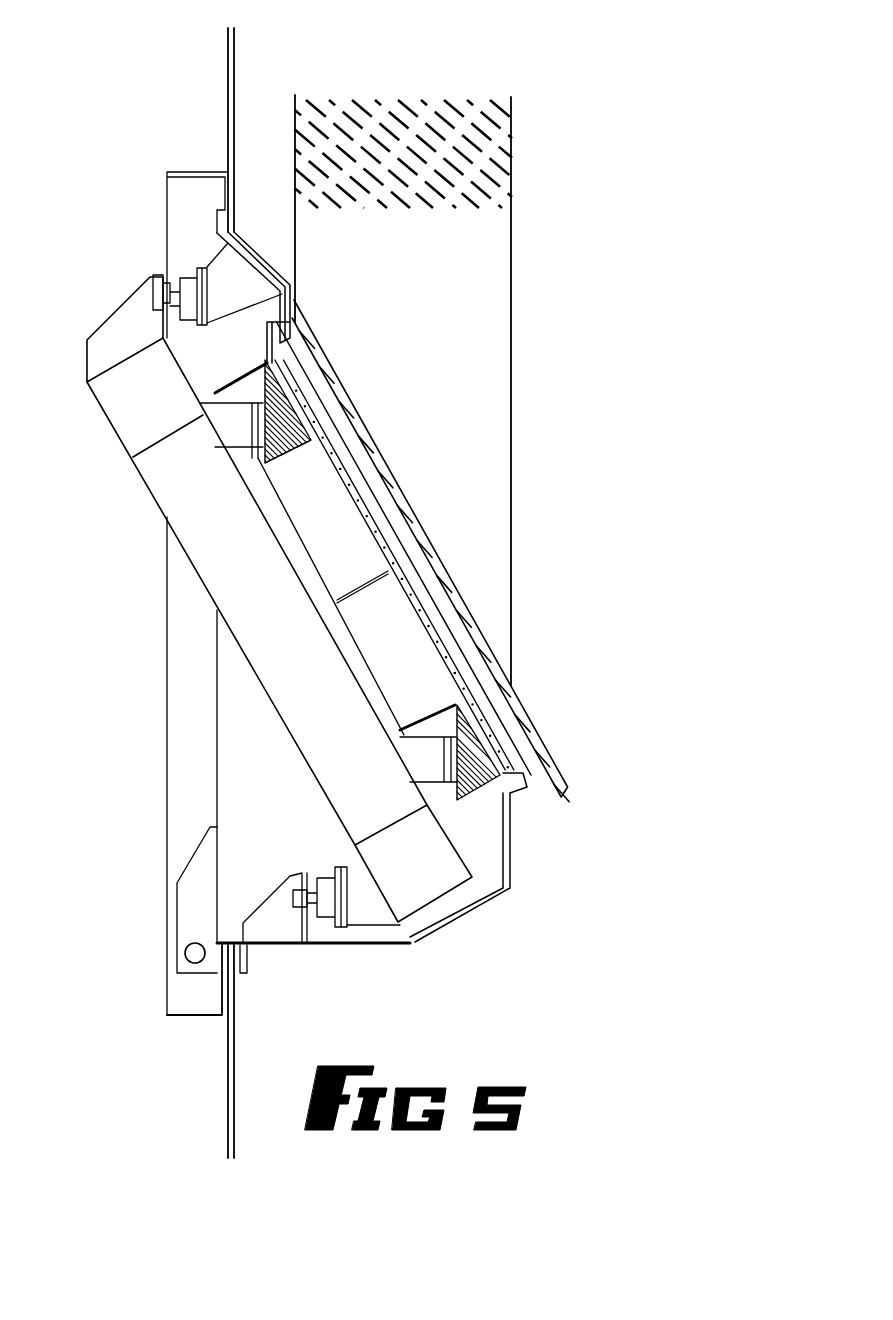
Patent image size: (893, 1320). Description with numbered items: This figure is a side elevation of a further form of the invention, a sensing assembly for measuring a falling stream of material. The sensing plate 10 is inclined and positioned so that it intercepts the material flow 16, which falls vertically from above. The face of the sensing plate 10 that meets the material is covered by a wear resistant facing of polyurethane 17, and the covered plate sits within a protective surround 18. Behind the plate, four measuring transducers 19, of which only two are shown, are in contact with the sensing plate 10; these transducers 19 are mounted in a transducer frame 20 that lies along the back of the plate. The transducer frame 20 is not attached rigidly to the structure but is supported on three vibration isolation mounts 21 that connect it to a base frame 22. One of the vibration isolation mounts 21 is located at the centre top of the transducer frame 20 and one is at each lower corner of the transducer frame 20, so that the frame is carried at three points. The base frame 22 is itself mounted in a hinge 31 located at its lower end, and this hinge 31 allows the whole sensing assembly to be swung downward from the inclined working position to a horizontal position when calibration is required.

The sensing plate 10 is at (392, 552).
The material flow 16 is at (495, 251).
The wear resistant facing of polyurethane 17 is at (323, 437).
The protective surround 18 is at (567, 787).
The measuring transducers 19 is at (245, 463).
The transducer frame 20 is at (120, 417).
The vibration isolation mounts 21 is at (152, 282).
The base frame 22 is at (197, 177).
The hinge 31 is at (185, 953).